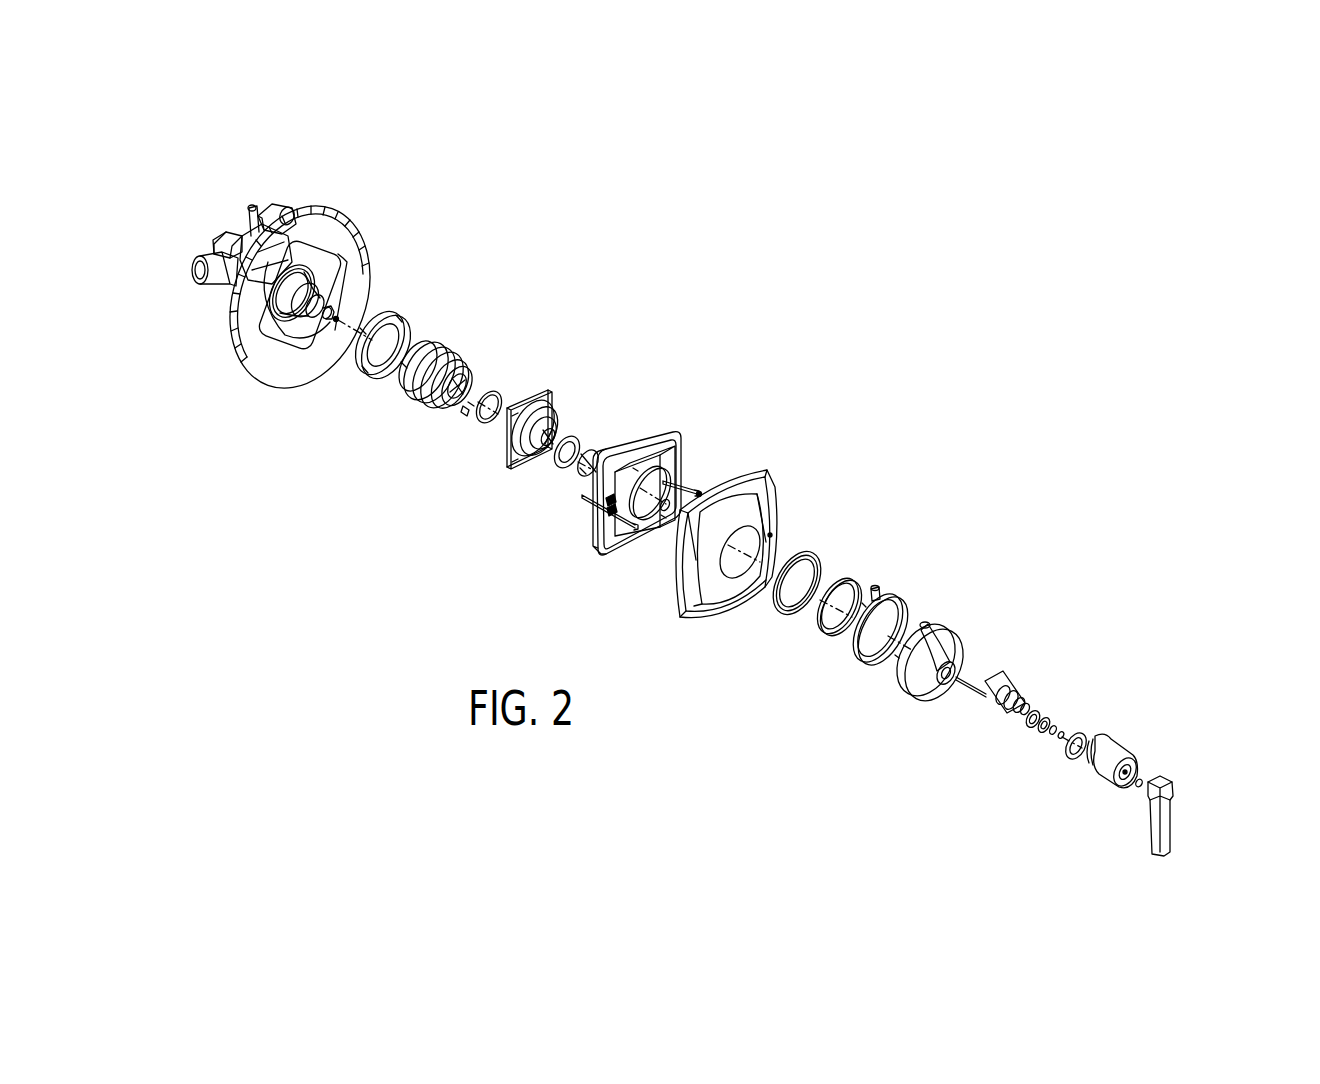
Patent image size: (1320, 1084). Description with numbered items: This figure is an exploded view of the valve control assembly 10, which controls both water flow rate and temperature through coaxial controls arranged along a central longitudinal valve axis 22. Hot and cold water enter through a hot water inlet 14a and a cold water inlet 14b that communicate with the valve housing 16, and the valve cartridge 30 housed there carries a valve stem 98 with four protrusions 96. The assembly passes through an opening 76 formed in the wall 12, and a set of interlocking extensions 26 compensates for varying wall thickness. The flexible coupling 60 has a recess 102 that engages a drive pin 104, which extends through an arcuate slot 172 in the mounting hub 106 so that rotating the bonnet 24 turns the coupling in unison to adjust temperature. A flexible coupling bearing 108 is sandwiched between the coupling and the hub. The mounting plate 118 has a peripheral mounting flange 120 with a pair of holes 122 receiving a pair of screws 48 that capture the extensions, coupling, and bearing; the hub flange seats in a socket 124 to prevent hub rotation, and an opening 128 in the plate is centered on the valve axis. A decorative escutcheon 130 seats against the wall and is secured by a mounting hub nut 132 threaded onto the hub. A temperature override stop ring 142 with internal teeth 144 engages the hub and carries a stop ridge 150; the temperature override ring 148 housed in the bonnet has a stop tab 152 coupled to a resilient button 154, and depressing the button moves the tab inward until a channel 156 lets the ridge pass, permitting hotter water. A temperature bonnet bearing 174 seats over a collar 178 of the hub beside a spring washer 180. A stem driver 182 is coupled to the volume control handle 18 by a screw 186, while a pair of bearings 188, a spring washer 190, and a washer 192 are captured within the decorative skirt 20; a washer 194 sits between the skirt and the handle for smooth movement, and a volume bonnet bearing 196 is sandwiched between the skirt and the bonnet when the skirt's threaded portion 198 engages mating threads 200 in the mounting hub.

The valve control assembly 10 is at (752, 355).
The wall 12 is at (358, 226).
The hot water inlet 14a is at (195, 268).
The cold water inlet 14b is at (283, 208).
The valve housing 16 is at (242, 232).
The volume control handle 18 is at (1174, 828).
The decorative skirt 20 is at (1128, 747).
The valve axis 22 is at (214, 246).
The bonnet 24 is at (900, 685).
The extensions 26 is at (327, 272).
The valve cartridge 30 is at (318, 315).
The screws 48 is at (584, 500).
The flexible coupling 60 is at (460, 352).
The opening 76 is at (272, 306).
The protrusions 96 is at (336, 325).
The valve stem 98 is at (318, 320).
The recess 102 is at (458, 404).
The drive pin 104 is at (466, 414).
The mounting hub 106 is at (548, 386).
The flexible coupling bearing 108 is at (496, 395).
The mounting plate 118 is at (670, 427).
The mounting flange 120 is at (616, 556).
The holes 122 is at (593, 540).
The socket 124 is at (690, 458).
The opening 128 is at (666, 540).
The escutcheon 130 is at (770, 480).
The mounting hub nut 132 is at (817, 545).
The temperature override stop ring 142 is at (848, 575).
The internal teeth 144 is at (790, 610).
The temperature override ring 148 is at (900, 600).
The stop ridge 150 is at (834, 633).
The stop tab 152 is at (895, 614).
The button 154 is at (880, 590).
The channel 156 is at (872, 665).
The arcuate slot 172 is at (532, 458).
The temperature bonnet bearing 174 is at (592, 452).
The collar 178 is at (538, 468).
The spring washer 180 is at (582, 470).
The stem driver 182 is at (1002, 683).
The screw 186 is at (962, 682).
The bearings 188 is at (1032, 716).
The spring washer 190 is at (1043, 735).
The washer 192 is at (1056, 740).
The washer 194 is at (1138, 790).
The volume bonnet bearing 196 is at (1082, 733).
The threaded portion 198 is at (1094, 752).
The mating threads 200 is at (566, 436).